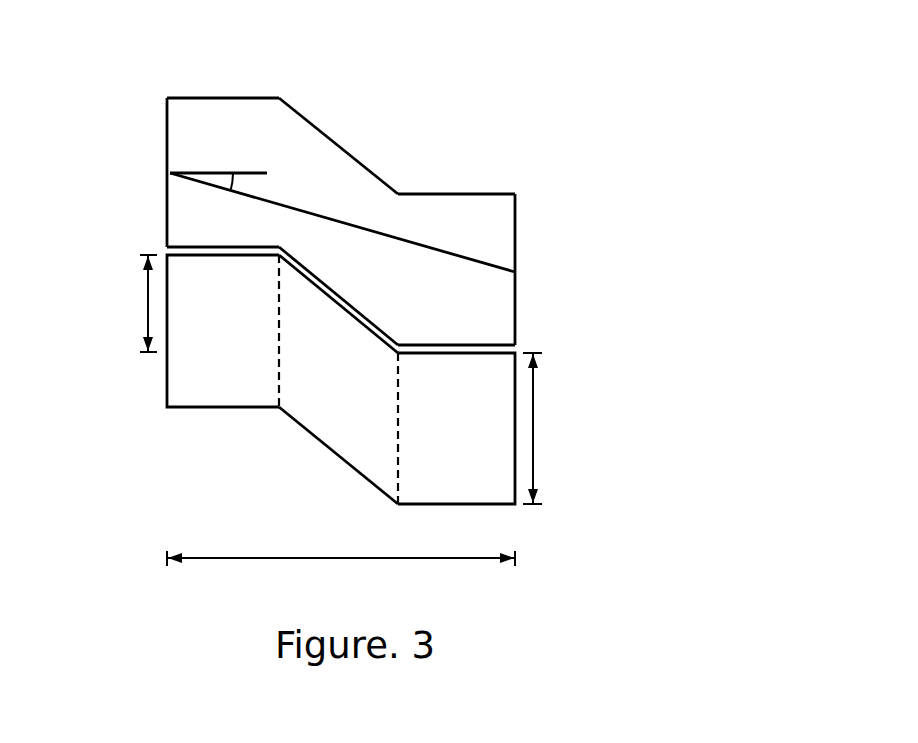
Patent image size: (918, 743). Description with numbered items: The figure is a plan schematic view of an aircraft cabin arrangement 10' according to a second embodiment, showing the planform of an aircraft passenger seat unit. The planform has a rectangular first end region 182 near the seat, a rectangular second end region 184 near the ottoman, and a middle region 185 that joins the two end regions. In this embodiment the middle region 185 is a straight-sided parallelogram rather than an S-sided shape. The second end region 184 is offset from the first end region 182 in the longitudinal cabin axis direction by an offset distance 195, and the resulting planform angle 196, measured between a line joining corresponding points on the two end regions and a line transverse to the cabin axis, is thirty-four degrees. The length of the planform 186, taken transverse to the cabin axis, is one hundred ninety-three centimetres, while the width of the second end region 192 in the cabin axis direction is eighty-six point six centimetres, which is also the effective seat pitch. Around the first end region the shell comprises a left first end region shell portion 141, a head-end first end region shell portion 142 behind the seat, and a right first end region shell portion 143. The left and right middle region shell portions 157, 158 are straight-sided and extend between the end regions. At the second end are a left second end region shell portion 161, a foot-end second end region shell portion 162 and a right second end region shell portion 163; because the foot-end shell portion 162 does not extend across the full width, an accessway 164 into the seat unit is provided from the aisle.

The aircraft cabin arrangement 10' is at (709, 161).
The left first end region shell portion 141 is at (217, 97).
The head-end first end region shell portion 142 is at (167, 213).
The right first end region shell portion 143 is at (215, 247).
The left middle region shell portion 157 is at (343, 145).
The right middle region shell portion 158 is at (337, 295).
The left second end region shell portion 161 is at (466, 194).
The foot-end second end region shell portion 162 is at (515, 297).
The right second end region shell portion 163 is at (453, 343).
The accessway 164 is at (515, 232).
The first end region 182 is at (240, 350).
The second end region 184 is at (484, 450).
The middle region 185 is at (365, 398).
The length of the planform 186 is at (292, 558).
The width of the second end region 192 is at (533, 440).
The offset distance 195 is at (148, 303).
The planform angle 196 is at (215, 179).